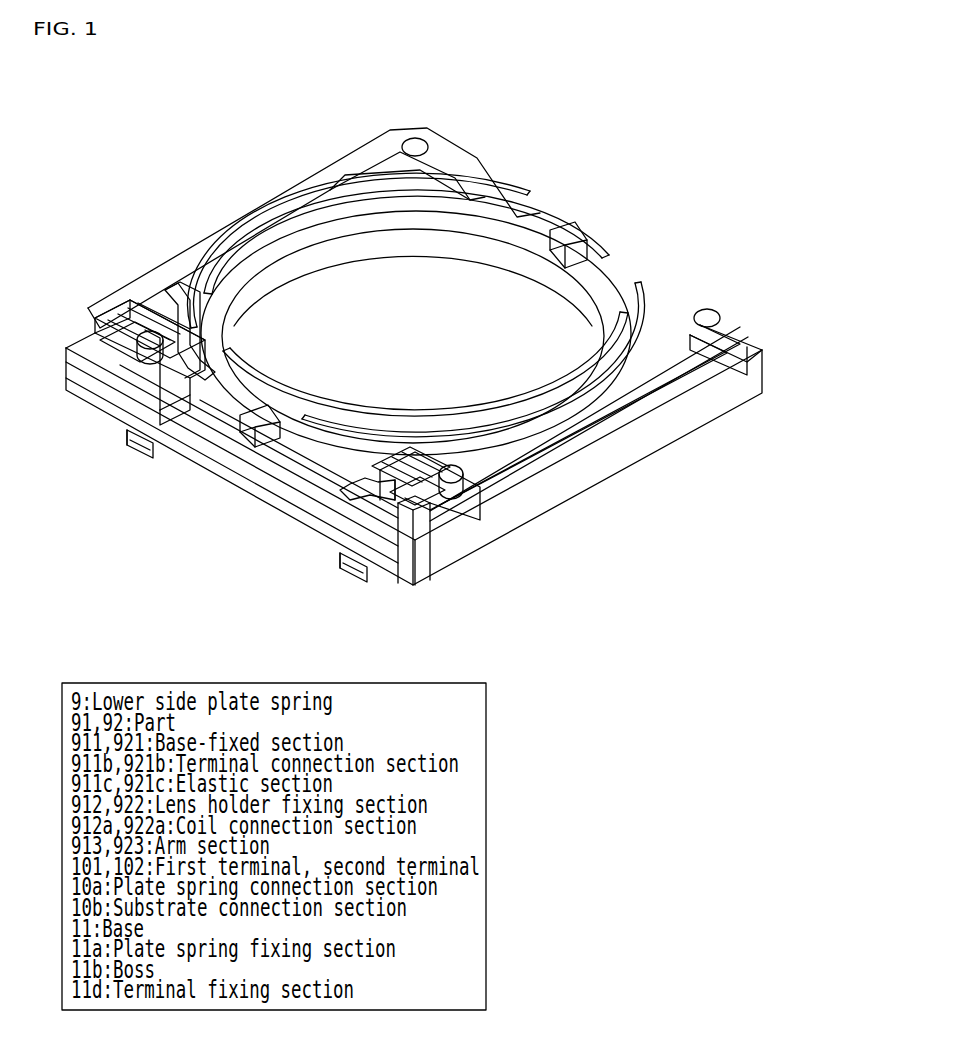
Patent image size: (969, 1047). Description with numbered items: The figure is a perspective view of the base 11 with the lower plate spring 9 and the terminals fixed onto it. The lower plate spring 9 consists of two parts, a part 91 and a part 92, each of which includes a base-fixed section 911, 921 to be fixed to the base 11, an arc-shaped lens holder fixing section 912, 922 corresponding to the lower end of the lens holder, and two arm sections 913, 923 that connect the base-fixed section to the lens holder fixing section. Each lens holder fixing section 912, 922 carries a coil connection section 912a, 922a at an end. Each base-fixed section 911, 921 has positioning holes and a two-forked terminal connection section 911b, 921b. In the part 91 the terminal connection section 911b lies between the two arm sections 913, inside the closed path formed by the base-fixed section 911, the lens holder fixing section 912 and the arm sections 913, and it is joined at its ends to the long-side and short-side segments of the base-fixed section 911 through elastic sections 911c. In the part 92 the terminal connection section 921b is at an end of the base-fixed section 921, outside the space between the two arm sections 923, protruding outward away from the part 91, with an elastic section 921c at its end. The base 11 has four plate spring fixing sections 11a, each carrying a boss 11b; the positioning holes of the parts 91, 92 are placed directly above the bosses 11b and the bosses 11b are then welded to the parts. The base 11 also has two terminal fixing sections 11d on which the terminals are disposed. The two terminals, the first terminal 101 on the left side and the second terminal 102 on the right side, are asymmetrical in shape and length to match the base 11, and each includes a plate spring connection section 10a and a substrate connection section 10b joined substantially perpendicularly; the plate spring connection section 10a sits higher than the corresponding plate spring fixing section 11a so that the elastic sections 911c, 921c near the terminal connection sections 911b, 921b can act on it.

The lower plate spring 9 is at (218, 153).
The part 91 is at (345, 160).
The part 92 is at (740, 300).
The base-fixed section 911 is at (268, 208).
The base-fixed section 921 is at (650, 390).
The terminal connection section 911b is at (125, 300).
The terminal connection section 921b is at (437, 510).
The elastic section 911c is at (175, 285).
The elastic section 921c is at (342, 498).
The lens holder fixing section 912 is at (300, 205).
The lens holder fixing section 922 is at (540, 405).
The coil connection section 912a is at (540, 213).
The coil connection section 922a is at (287, 433).
The arm section 913 is at (473, 190).
The arm section 923 is at (630, 280).
The first terminal 101 is at (137, 450).
The second terminal 102 is at (347, 573).
The plate spring connection section 10a is at (115, 345).
The substrate connection section 10b is at (140, 457).
The base 11 is at (652, 460).
The plate spring fixing section 11a is at (158, 367).
The boss 11b is at (412, 140).
The terminal fixing section 11d is at (180, 290).